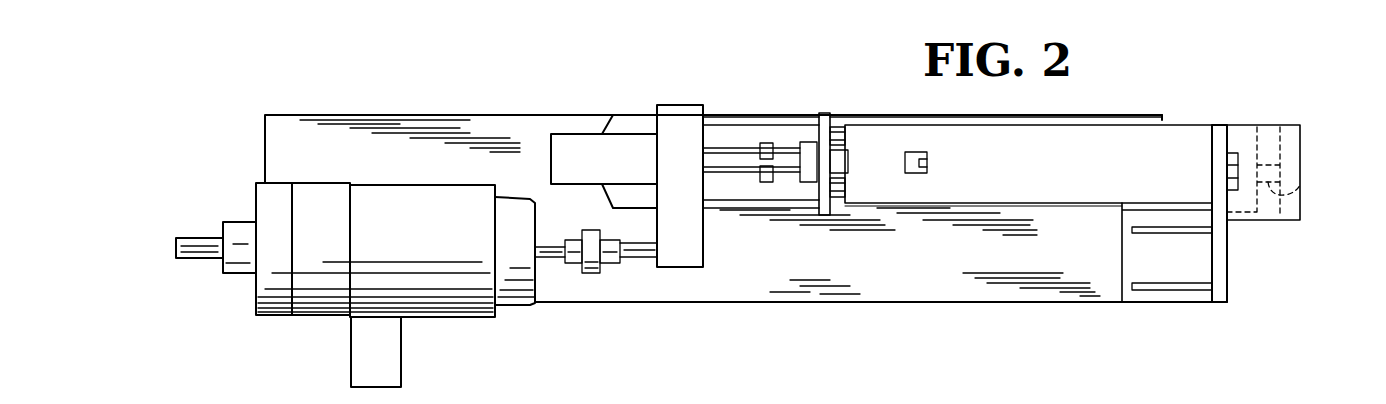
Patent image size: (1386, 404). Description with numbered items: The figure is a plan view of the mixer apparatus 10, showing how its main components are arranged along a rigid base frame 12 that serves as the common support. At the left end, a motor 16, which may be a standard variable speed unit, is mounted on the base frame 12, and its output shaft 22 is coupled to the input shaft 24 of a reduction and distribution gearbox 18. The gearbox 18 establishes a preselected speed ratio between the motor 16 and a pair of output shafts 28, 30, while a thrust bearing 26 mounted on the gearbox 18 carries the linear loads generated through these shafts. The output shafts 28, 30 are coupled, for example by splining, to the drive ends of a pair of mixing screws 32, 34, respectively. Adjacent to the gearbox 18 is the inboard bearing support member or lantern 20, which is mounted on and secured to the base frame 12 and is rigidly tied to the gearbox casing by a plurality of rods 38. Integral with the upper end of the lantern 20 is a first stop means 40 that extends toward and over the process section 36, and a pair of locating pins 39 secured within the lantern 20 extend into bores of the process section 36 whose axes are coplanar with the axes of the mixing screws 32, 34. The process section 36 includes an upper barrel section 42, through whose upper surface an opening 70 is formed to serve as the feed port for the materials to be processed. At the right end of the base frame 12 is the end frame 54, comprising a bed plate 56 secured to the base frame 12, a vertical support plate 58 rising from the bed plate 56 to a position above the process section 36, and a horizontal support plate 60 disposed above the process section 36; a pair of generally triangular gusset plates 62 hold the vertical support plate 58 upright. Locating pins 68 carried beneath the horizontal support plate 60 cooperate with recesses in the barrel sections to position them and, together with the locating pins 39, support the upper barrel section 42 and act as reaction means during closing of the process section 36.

The apparatus 10 is at (1178, 96).
The base frame 12 is at (900, 280).
The motor 16 is at (426, 250).
The gearbox 18 is at (694, 192).
The bearing support member 20 is at (823, 113).
The output shaft 22 is at (548, 245).
The input shaft 24 is at (633, 258).
The thrust bearing 26 is at (617, 168).
The output shaft 28 is at (725, 148).
The output shaft 30 is at (727, 176).
The mixing screw 32 is at (780, 145).
The mixing screw 34 is at (790, 183).
The process section 36 is at (1074, 202).
The rods 38 is at (712, 117).
The locating pins 39 is at (840, 127).
The first stop means 40 is at (848, 156).
The upper barrel section 42 is at (1067, 140).
The end frame 54 is at (1193, 302).
The bed plate 56 is at (1162, 302).
The vertical support plate 58 is at (1228, 260).
The horizontal support plate 60 is at (1290, 130).
The gusset plate 62 is at (1148, 283).
The locating pins 68 is at (1300, 182).
The opening 70 is at (927, 163).